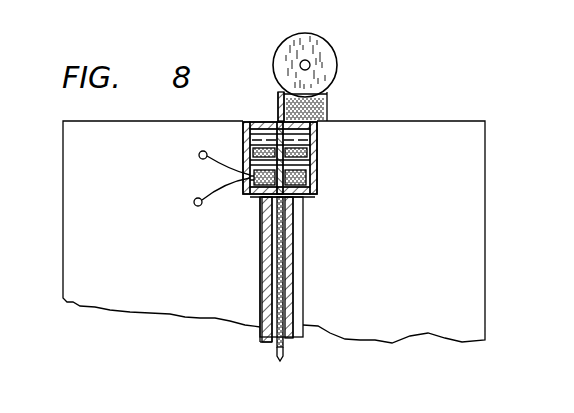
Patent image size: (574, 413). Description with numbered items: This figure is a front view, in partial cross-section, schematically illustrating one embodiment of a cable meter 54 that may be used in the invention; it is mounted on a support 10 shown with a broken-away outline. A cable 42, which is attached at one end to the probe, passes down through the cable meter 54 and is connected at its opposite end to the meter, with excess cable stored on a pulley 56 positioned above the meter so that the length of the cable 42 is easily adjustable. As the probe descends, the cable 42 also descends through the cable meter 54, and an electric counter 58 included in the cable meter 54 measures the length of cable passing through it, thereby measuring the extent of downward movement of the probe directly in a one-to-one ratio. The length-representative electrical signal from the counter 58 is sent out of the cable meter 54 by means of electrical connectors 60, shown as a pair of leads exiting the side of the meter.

The substrate sheet 10 is at (131, 281).
The cable 42 is at (285, 347).
The cable meter 54 is at (317, 163).
The pulley 56 is at (337, 66).
The electric counter 58 is at (250, 196).
The electrical connectors 60 is at (195, 200).